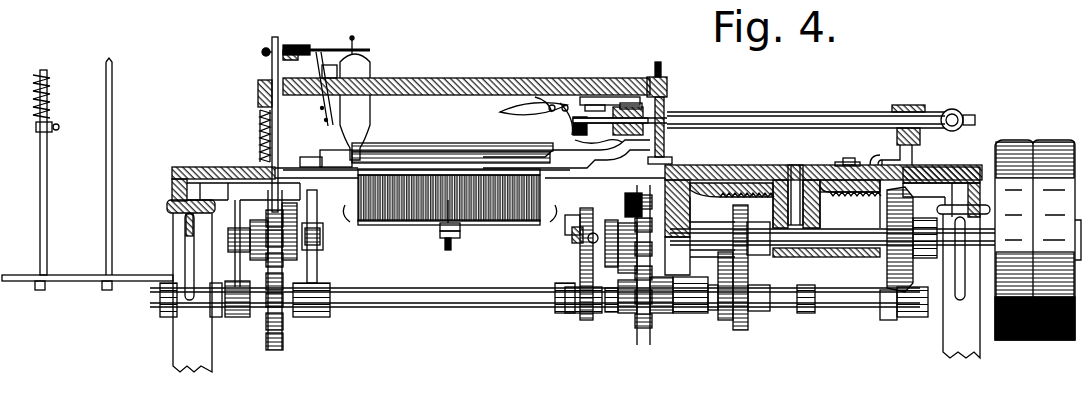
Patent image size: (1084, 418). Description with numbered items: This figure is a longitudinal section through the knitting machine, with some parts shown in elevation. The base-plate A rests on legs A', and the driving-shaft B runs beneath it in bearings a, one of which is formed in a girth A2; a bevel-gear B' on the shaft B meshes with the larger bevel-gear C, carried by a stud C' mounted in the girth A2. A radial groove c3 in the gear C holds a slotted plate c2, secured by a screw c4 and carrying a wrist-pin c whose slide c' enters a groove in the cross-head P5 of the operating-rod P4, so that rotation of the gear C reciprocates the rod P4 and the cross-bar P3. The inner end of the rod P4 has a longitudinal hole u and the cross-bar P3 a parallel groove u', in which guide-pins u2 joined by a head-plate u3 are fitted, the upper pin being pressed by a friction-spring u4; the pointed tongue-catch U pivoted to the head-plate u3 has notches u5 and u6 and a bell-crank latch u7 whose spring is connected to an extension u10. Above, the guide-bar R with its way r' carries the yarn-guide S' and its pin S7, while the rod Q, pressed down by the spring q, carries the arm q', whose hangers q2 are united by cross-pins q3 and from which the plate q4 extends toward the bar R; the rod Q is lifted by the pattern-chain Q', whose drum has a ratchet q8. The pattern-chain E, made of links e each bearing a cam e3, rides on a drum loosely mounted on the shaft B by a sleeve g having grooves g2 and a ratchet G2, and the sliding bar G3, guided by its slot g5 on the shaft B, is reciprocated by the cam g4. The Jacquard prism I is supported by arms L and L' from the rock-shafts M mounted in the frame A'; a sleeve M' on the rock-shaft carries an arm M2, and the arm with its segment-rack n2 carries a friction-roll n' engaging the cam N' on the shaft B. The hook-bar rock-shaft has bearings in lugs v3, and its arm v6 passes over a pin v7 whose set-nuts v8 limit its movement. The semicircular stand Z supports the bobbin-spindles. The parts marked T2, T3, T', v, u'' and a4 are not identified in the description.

The base-plate A is at (577, 178).
The supporting legs A' is at (578, 286).
The girth A2 is at (826, 213).
The semicircular stand Z is at (70, 285).
The rod Q is at (266, 113).
The pattern-chain Q' is at (265, 271).
The laterally-projecting arm q' is at (251, 58).
The spring q is at (322, 152).
The hangers q2 is at (312, 60).
The cross-pins q3 is at (320, 108).
The plate q4 is at (322, 50).
The ratchet q8 is at (283, 255).
The ways r' is at (249, 121).
The block T2 is at (330, 64).
The plate T3 is at (585, 97).
The post T' is at (667, 130).
The upwardly-projecting pin S7 is at (356, 47).
The yarn-guide S' is at (372, 102).
The guide-bar R is at (452, 78).
The grooved octagonal prism I is at (440, 142).
The comb v is at (495, 226).
The lugs v3 is at (350, 225).
The arm v6 is at (441, 222).
The pin v7 is at (452, 250).
The set-nuts v8 is at (446, 238).
The tongue-catch U is at (528, 112).
The hole u is at (637, 108).
The groove u' is at (638, 83).
The arm u'' is at (523, 116).
The guide-pins u2 is at (612, 103).
The head-plate u3 is at (598, 100).
The friction-spring u4 is at (657, 62).
The notch u5 is at (552, 105).
The notch u6 is at (566, 120).
The bell-crank-lever latch u7 is at (565, 104).
The extension u10 is at (598, 141).
The cross-bar P3 is at (566, 153).
The operating-rod P4 is at (790, 112).
The cross-head P5 is at (908, 105).
The bevel-gear C is at (772, 201).
The stud C' is at (802, 185).
The wrist-pin c is at (916, 138).
The slide c' is at (893, 148).
The slotted plate c2 is at (877, 156).
The radial groove c3 is at (838, 165).
The screw c4 is at (852, 152).
The bearings a is at (686, 213).
The bearing a4 is at (590, 320).
The driving-shaft B is at (832, 232).
The bevel-gear B' is at (898, 239).
The arm L is at (317, 253).
The arm L' is at (555, 309).
The sleeve g is at (616, 243).
The peripheral grooves g2 is at (640, 252).
The cam g4 is at (579, 233).
The slot g5 is at (624, 196).
The ratchet G2 is at (590, 270).
The sliding bar G3 is at (575, 250).
The pattern-chain E is at (650, 335).
The links e is at (635, 322).
The cam e3 is at (625, 315).
The rock-shaft M is at (886, 311).
The sleeve M' is at (781, 313).
The arm M2 is at (704, 315).
The cam N' is at (753, 267).
The friction-roll n' is at (735, 305).
The segment-rack n2 is at (718, 262).